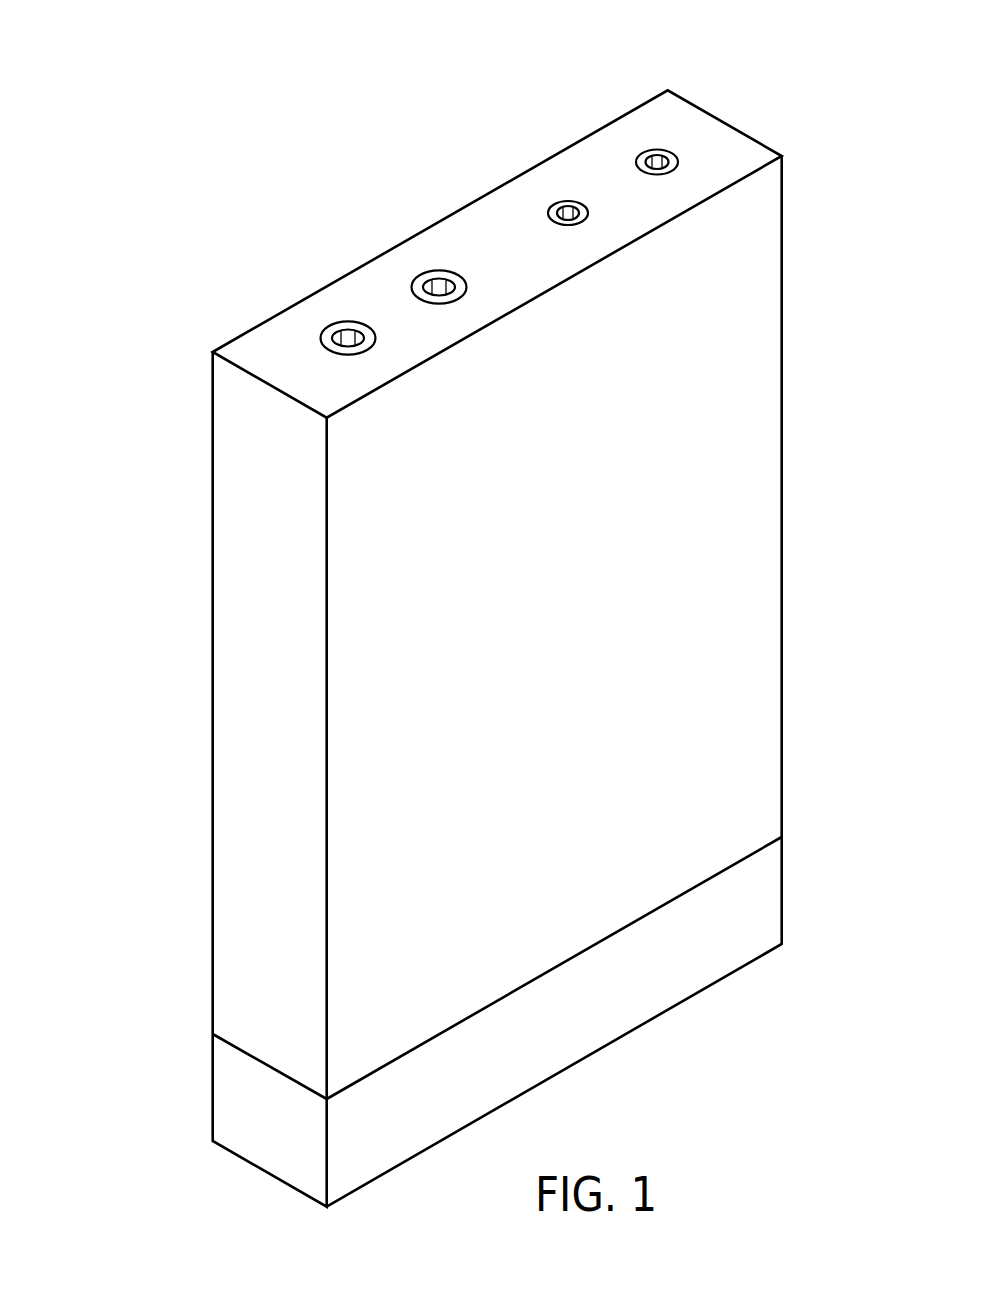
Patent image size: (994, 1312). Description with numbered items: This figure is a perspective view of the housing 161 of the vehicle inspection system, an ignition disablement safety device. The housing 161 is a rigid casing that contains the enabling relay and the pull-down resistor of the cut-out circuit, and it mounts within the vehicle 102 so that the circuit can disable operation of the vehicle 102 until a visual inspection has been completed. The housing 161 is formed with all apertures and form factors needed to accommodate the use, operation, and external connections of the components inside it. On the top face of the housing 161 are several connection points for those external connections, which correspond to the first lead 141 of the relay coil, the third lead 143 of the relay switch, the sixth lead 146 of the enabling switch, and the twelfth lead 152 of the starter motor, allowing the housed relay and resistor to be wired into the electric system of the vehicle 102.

The vehicle 102 is at (172, 82).
The first lead 141 is at (345, 330).
The third lead 143 is at (563, 203).
The sixth lead 146 is at (430, 270).
The twelfth lead 152 is at (659, 147).
The housing 161 is at (756, 342).